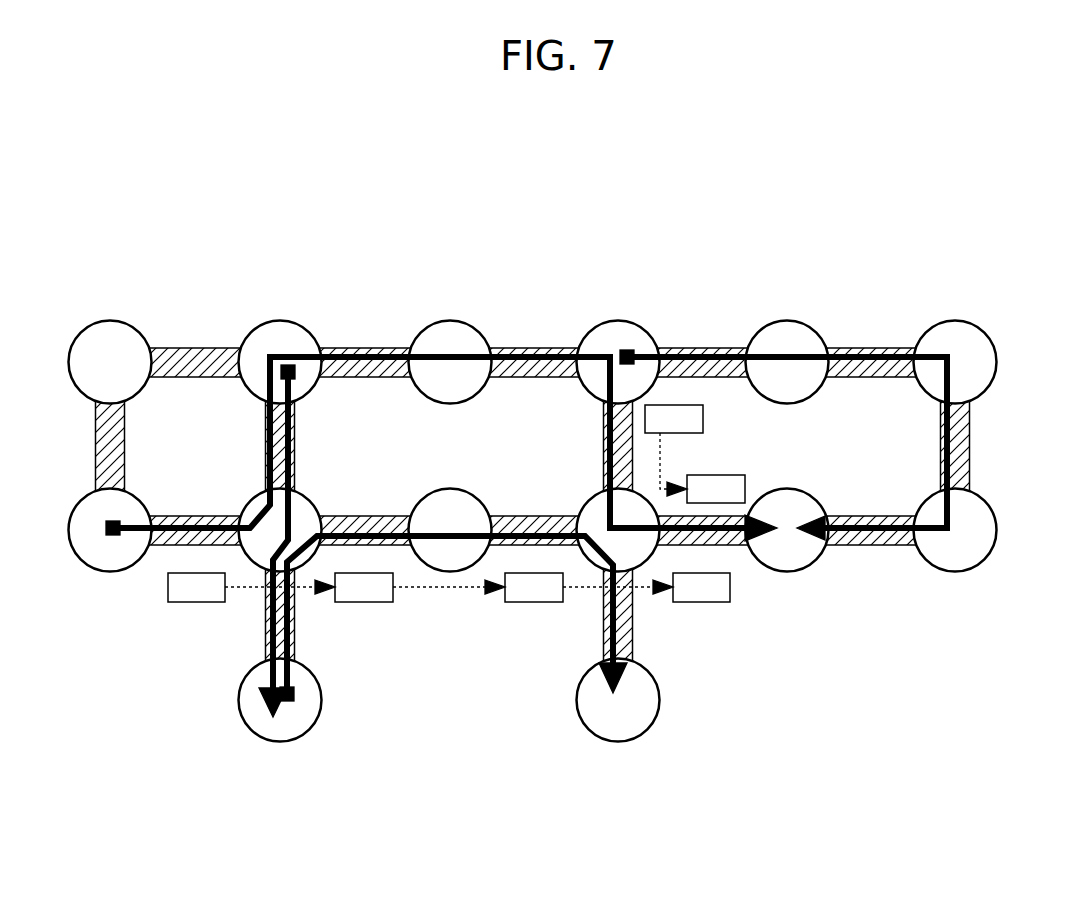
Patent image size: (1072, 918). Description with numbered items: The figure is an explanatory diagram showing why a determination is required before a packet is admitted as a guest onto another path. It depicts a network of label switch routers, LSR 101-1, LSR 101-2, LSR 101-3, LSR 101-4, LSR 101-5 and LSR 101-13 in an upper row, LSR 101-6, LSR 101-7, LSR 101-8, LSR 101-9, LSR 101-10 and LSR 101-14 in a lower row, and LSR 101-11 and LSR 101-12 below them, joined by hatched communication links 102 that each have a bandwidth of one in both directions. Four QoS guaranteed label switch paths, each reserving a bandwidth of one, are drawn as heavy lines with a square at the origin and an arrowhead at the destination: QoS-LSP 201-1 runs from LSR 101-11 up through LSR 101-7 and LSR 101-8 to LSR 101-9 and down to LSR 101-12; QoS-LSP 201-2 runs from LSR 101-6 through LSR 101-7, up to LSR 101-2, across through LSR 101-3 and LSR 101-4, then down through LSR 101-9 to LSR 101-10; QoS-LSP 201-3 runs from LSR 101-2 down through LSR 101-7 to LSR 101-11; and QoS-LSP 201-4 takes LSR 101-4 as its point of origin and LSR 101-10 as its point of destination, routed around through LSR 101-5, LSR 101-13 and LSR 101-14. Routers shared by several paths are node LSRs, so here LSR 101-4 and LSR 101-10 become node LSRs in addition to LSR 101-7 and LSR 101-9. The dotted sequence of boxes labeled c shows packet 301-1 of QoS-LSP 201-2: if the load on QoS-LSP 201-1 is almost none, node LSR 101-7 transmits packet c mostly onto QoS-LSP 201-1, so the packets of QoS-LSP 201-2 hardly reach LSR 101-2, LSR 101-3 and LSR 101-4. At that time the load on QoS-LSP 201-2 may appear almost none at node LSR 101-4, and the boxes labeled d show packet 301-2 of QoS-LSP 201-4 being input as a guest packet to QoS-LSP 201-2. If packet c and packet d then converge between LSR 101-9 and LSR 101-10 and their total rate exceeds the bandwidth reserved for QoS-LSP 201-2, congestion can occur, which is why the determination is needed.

The LSR 101-1 is at (110, 321).
The LSR 101-2 is at (282, 321).
The LSR 101-3 is at (448, 321).
The LSR 101-4 is at (617, 321).
The LSR 101-5 is at (787, 321).
The LSR 101-6 is at (110, 573).
The LSR 101-7 is at (255, 503).
The LSR 101-8 is at (420, 505).
The LSR 101-9 is at (590, 495).
The LSR 101-10 is at (787, 573).
The LSR 101-11 is at (280, 745).
The LSR 101-12 is at (618, 742).
The LSR 101-13 is at (955, 321).
The LSR 101-14 is at (955, 573).
The communication link 102 is at (96, 452).
The LSP 201-1 is at (488, 530).
The LSP 201-2 is at (535, 355).
The LSP 201-3 is at (267, 610).
The LSP 201-4 is at (870, 350).
The packet 301-1 is at (185, 603).
The packet 301-2 is at (703, 418).